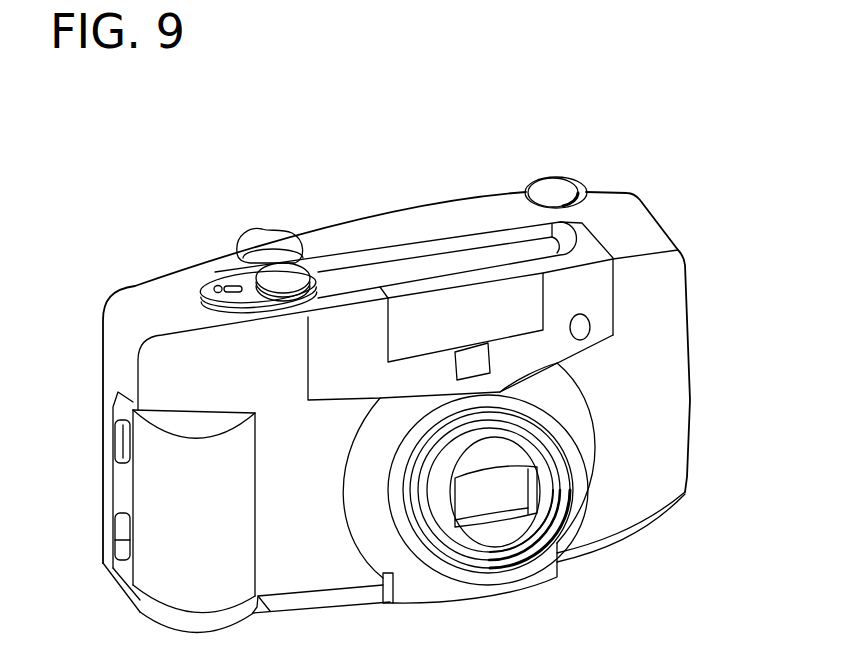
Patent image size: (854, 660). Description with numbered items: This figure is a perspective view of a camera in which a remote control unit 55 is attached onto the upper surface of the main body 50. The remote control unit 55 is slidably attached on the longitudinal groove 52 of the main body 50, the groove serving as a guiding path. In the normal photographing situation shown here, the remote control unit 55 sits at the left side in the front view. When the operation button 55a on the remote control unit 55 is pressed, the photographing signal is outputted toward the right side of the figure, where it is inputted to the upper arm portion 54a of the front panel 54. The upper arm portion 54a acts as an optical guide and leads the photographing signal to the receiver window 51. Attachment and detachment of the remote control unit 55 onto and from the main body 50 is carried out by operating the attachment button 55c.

The main body 50 is at (693, 307).
The receiver window 51 is at (590, 324).
The longitudinal groove 52 is at (437, 263).
The front panel 54 is at (605, 286).
The upper arm portion 54a is at (590, 232).
The remote control unit 55 is at (225, 270).
The operation button 55a is at (280, 266).
The attachment button 55c is at (207, 282).